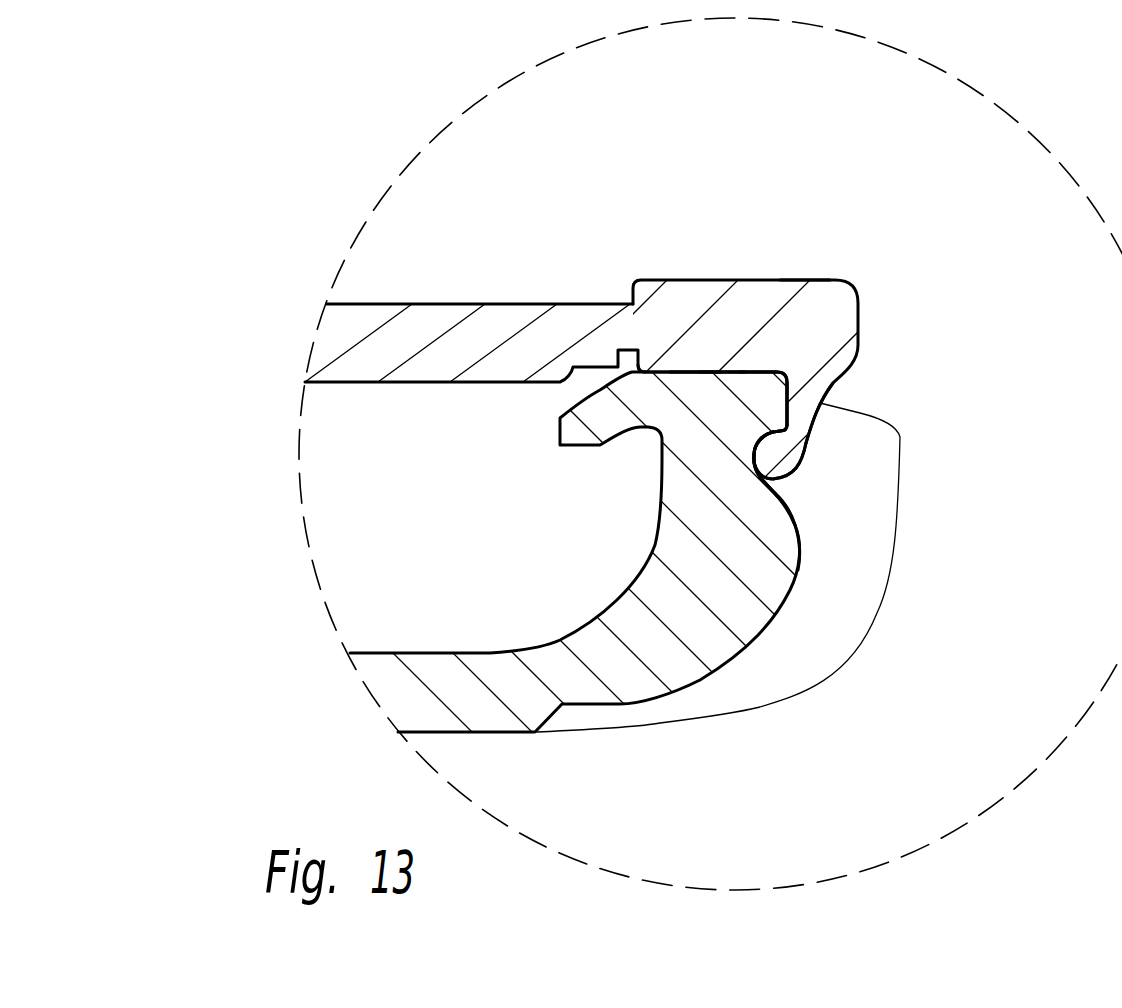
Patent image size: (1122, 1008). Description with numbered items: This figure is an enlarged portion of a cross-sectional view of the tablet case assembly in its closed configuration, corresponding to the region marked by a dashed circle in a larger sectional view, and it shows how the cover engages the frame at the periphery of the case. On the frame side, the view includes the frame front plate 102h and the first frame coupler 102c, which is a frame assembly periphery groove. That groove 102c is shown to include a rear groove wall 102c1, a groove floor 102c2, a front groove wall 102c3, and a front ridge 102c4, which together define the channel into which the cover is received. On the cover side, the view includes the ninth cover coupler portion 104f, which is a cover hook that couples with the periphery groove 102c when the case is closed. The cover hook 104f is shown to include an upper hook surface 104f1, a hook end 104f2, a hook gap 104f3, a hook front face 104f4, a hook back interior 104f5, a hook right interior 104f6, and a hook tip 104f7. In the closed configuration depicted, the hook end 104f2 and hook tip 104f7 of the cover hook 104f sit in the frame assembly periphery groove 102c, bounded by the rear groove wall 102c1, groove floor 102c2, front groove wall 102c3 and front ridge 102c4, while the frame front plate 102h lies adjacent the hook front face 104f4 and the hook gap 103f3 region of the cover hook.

The frame front plate 102h is at (667, 395).
The first frame coupler 102c is at (780, 490).
The rear groove wall 102c1 is at (793, 509).
The groove floor 102c2 is at (765, 480).
The front groove wall 102c3 is at (790, 500).
The front ridge 102c4 is at (790, 423).
The ninth cover coupler portion 104f is at (837, 325).
The upper hook surface 104f1 is at (820, 408).
The hook end 104f2 is at (790, 458).
The hook gap 104f3 is at (789, 380).
The hook front face 104f4 is at (803, 280).
The hook back interior 104f5 is at (740, 375).
The hook right interior 104f6 is at (777, 430).
The hook tip 104f7 is at (757, 452).